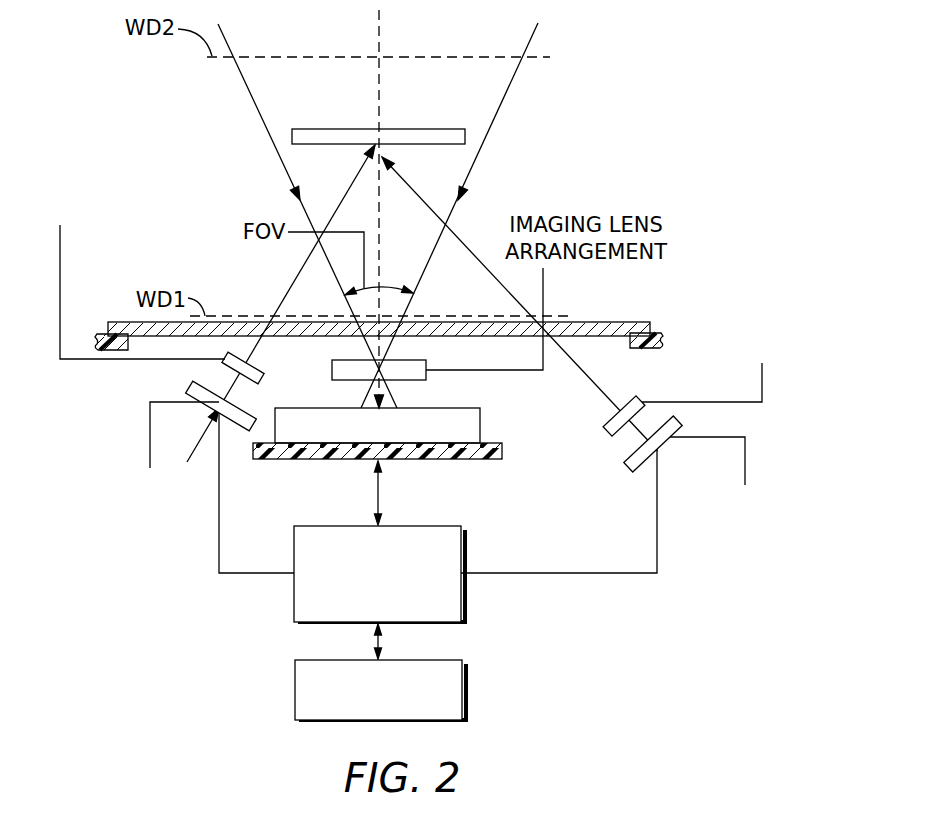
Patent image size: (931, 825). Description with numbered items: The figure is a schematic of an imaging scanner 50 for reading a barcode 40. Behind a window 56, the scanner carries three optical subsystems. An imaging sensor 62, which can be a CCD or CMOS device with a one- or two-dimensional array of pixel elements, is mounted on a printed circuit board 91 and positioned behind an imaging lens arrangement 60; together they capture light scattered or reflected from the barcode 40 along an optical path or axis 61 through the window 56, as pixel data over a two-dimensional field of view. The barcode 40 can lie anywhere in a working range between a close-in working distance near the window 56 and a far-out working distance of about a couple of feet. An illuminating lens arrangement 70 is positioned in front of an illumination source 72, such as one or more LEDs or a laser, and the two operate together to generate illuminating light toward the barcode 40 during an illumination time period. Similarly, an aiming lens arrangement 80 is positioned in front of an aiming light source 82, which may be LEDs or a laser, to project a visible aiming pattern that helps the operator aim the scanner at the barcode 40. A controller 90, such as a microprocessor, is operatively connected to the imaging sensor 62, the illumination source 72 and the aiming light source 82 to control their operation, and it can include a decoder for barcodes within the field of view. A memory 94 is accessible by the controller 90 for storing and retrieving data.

The barcode 40 is at (435, 128).
The imaging scanner 50 is at (622, 29).
The window 56 is at (121, 321).
The imaging lens arrangement 60 is at (332, 372).
The optical path or axis 61 is at (381, 36).
The imaging sensor 62 is at (474, 408).
The illuminating lens arrangement 70 is at (762, 300).
The illumination source 72 is at (790, 536).
The aiming lens arrangement 80 is at (70, 166).
The aiming light source 82 is at (145, 549).
The controller 90 is at (452, 526).
The printed circuit board 91 is at (412, 460).
The memory 94 is at (450, 660).